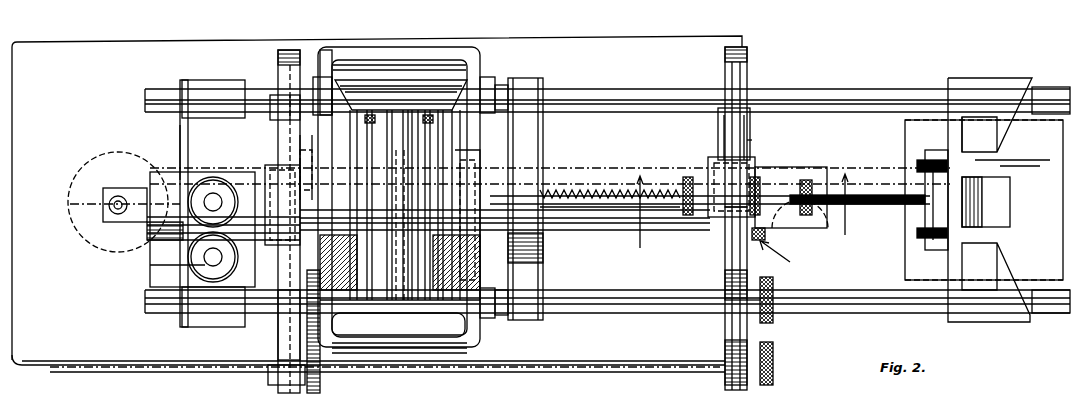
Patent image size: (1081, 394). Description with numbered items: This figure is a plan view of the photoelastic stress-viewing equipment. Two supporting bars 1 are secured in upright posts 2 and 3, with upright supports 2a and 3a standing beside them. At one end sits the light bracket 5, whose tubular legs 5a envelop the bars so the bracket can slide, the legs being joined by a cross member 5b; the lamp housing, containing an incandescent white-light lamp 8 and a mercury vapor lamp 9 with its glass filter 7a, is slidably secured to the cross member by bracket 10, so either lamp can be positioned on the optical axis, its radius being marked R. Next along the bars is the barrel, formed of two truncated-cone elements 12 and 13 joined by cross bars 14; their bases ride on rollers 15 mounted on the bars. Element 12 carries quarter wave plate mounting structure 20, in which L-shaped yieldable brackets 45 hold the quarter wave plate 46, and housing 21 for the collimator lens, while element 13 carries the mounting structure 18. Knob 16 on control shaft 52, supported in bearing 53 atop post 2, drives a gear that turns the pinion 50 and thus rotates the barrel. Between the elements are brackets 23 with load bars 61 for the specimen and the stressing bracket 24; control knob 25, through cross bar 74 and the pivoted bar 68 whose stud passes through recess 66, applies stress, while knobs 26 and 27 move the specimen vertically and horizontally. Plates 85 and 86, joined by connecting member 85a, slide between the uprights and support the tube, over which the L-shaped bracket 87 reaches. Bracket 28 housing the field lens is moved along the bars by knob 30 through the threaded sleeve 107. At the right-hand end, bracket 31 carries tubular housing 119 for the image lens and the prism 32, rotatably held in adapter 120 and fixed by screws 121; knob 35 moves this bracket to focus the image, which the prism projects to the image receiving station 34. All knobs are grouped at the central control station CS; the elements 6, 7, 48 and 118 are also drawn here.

The supporting bars 1 is at (843, 90).
The upright post 2 is at (278, 343).
The upright support 2a is at (288, 58).
The upright post 3 is at (748, 330).
The upright support 3a is at (748, 72).
The light bracket 5 is at (175, 71).
The tubular legs 5a is at (202, 80).
The cross member 5b is at (180, 136).
The upper roller 6 is at (215, 200).
The lower roller 7 is at (240, 265).
The filter 7a is at (240, 255).
The lamp 8 is at (220, 205).
The lamp 9 is at (200, 265).
The bracket 10 is at (180, 240).
The element 12 is at (335, 95).
The element 13 is at (470, 70).
The cross bars 14 is at (455, 48).
The rollers 15 is at (322, 77).
The knob 16 is at (775, 376).
The quarter wave plate mounting structure 18 is at (428, 112).
The quarter wave plate mounting structure 20 is at (372, 112).
The housing 21 is at (290, 165).
The brackets 23 is at (400, 112).
The stressing bracket 24 is at (400, 300).
The control knob 25 is at (820, 175).
The control knob 26 is at (778, 320).
The control knob 27 is at (767, 236).
The bracket 28 is at (545, 133).
The control knob 30 is at (688, 177).
The bracket 31 is at (1000, 78).
The prism 32 is at (1012, 203).
The image receiving station 34 is at (1048, 313).
The control knob 35 is at (758, 177).
The L-shaped yieldable brackets 45 is at (477, 347).
The quarter wave plate 46 is at (404, 314).
The gear 48 is at (514, 314).
The pinion 50 is at (338, 325).
The control shaft 52 is at (632, 352).
The bearing 53 is at (268, 383).
The load bars 61 is at (430, 185).
The recess 66 is at (752, 140).
The bar 68 is at (622, 190).
The cross bar 74 is at (806, 180).
The plate 85 is at (278, 118).
The connecting member 85a is at (290, 95).
The plate 86 is at (309, 167).
The L-shaped bracket 87 is at (718, 125).
The sleeve 107 is at (580, 190).
The bar 118 is at (858, 205).
The tubular housing 119 is at (933, 180).
The adapter 120 is at (1012, 167).
The screws 121 is at (928, 160).
The radius R is at (124, 202).
The central control station CS is at (790, 262).